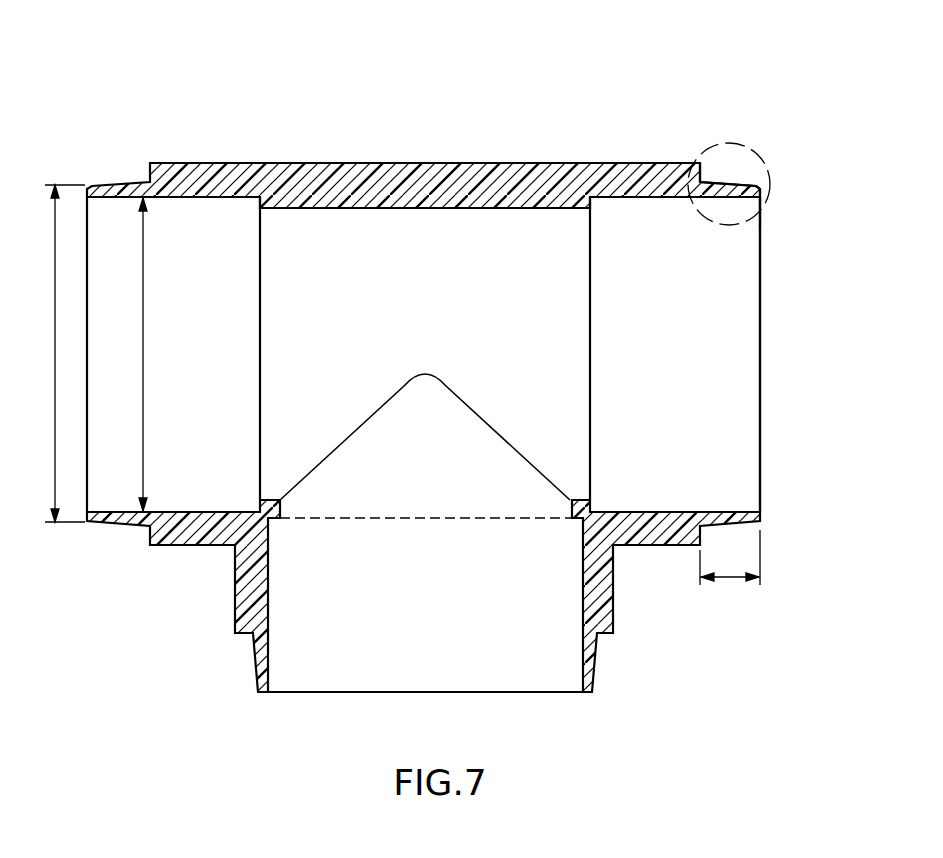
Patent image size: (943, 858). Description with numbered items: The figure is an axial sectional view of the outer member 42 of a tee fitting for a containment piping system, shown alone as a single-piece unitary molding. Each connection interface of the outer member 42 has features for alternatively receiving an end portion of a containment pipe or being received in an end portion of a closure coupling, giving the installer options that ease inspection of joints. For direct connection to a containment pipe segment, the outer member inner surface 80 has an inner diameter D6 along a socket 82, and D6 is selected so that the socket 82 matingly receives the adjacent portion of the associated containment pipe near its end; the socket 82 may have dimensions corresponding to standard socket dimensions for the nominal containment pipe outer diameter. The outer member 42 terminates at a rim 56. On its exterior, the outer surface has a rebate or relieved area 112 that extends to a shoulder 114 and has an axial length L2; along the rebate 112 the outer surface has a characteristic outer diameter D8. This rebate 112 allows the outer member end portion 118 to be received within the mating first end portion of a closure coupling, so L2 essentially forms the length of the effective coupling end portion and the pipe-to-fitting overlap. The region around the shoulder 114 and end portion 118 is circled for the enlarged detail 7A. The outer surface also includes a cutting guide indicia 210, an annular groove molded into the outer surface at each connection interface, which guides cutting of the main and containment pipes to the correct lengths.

The outer member 42 is at (437, 128).
The cutting guide indicia 210 is at (197, 158).
The outer member inner surface 80 is at (236, 401).
The socket 82 is at (116, 461).
The rim 56 is at (763, 472).
The detail view 7A is at (741, 143).
The shoulder 114 is at (712, 150).
The rebate 112 is at (750, 167).
The outer member end portion 118 is at (712, 198).
The outer diameter along the rebate D8 is at (55, 347).
The inner diameter of the outer member inner surface D6 is at (143, 337).
The axial length of the rebate L2 is at (730, 578).